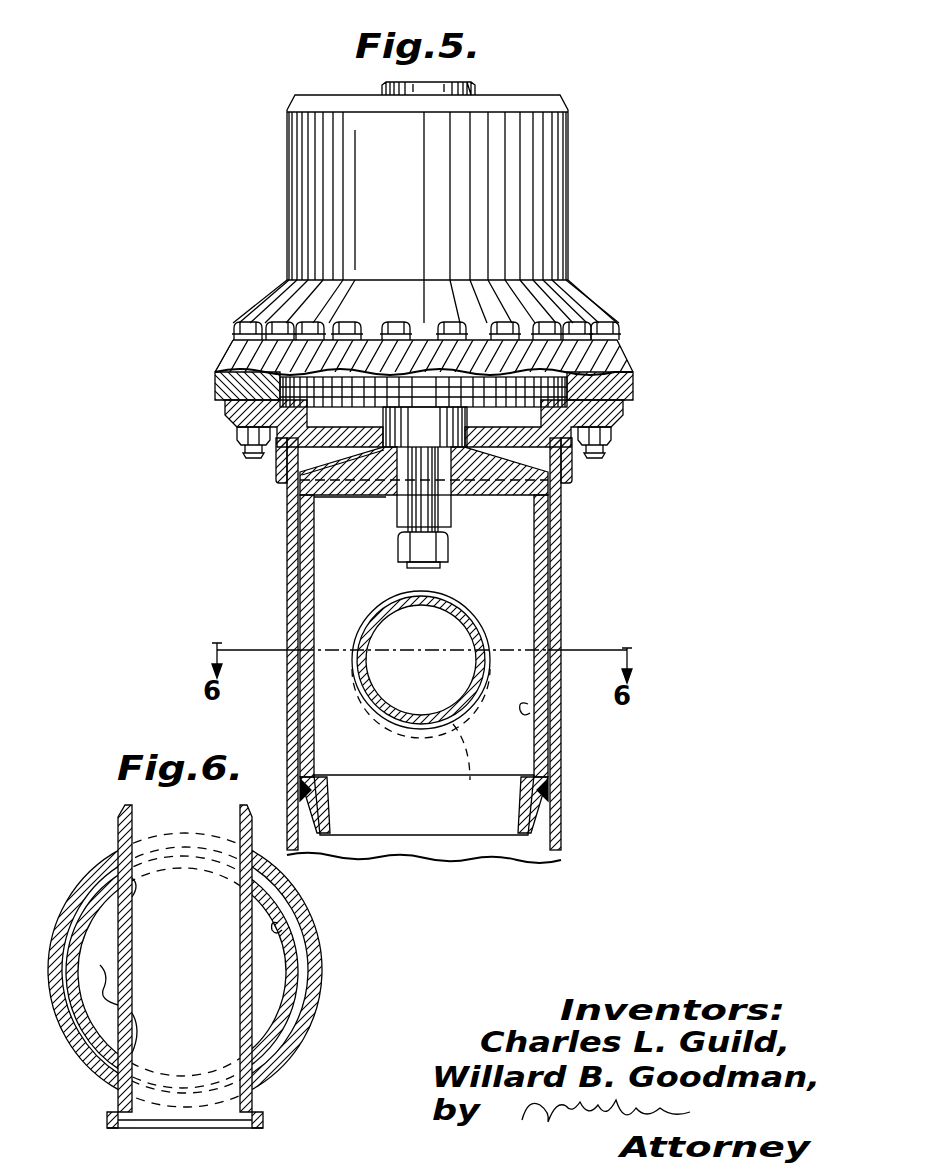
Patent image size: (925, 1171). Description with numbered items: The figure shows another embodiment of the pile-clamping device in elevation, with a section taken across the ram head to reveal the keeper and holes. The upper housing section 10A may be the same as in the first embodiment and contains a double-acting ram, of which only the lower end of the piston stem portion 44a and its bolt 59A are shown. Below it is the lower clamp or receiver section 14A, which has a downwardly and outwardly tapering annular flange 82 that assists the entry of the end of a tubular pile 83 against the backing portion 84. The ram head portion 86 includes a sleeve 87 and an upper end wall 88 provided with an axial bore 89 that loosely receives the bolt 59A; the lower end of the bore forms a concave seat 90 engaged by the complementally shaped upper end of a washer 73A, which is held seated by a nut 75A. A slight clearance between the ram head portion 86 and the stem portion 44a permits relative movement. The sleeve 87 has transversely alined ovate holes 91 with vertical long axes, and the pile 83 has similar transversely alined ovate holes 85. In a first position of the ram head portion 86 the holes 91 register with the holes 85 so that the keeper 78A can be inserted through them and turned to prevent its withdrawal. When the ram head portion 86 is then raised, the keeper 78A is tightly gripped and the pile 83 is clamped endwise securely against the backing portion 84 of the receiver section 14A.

In FIG. 5, the upper housing section 10A is at (568, 228).
In FIG. 5, the lower clamp or receiver section 14A is at (627, 423).
In FIG. 5, the stem portion 44a is at (573, 468).
In FIG. 5, the annular flange 82 is at (277, 459).
In FIG. 5, the backing portion 84 is at (312, 483).
In FIG. 5, the pile 83 is at (386, 650).
In FIG. 6, the pile 83 is at (322, 933).
In FIG. 5, the upper end wall 88 is at (367, 497).
In FIG. 5, the axial bore 89 is at (347, 497).
In FIG. 5, the concave seat 90 is at (460, 503).
In FIG. 5, the bolt 59A is at (447, 512).
In FIG. 5, the washer 73A is at (440, 514).
In FIG. 5, the nut 75A is at (433, 549).
In FIG. 5, the ram head portion 86 is at (527, 584).
In FIG. 6, the ram head portion 86 is at (282, 963).
In FIG. 5, the sleeve 87 is at (542, 723).
In FIG. 6, the sleeve 87 is at (290, 921).
In FIG. 5, the holes 91 is at (383, 584).
In FIG. 6, the holes 91 is at (112, 965).
In FIG. 5, the keeper 78A is at (423, 707).
In FIG. 6, the keeper 78A is at (118, 1093).
In FIG. 5, the holes 85 is at (493, 788).
In FIG. 6, the holes 85 is at (128, 845).